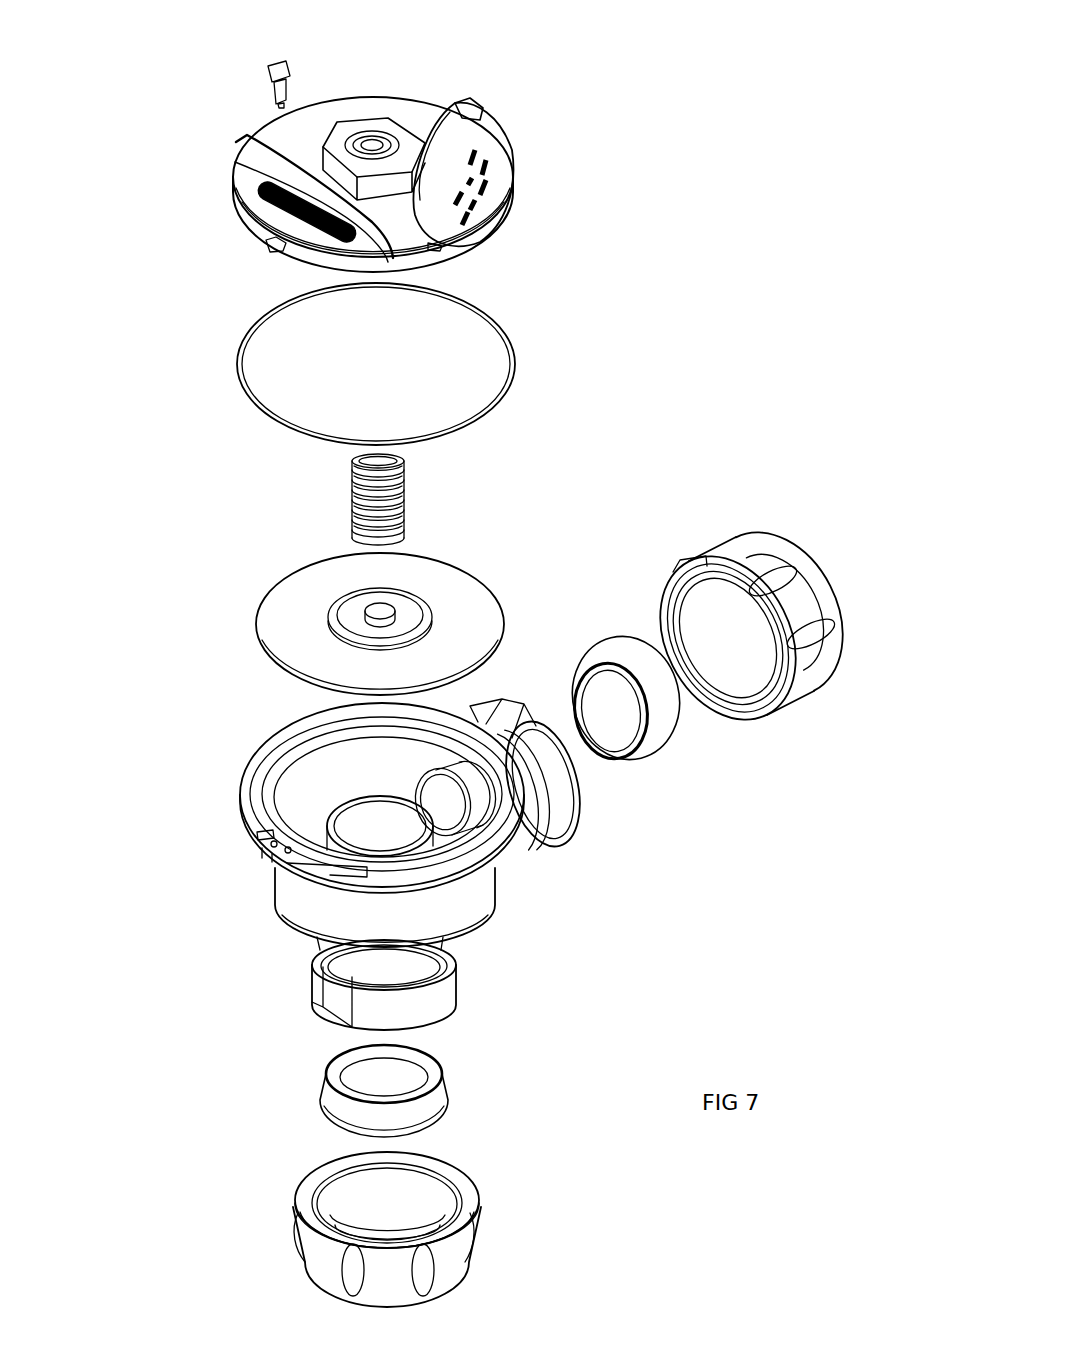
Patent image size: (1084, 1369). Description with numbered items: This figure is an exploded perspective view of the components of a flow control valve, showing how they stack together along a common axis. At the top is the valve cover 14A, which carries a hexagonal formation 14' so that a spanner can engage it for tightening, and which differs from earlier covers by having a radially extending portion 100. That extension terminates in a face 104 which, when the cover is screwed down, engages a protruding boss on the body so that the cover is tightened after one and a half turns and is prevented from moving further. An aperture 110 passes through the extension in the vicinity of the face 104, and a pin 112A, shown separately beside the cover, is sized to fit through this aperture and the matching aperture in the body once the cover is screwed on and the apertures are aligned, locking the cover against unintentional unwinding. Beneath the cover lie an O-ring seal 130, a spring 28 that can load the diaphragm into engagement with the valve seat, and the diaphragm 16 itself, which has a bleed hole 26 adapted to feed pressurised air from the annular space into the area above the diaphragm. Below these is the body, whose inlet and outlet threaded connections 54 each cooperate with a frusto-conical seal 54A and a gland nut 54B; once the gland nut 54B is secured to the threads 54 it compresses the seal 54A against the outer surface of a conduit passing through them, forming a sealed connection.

The hexagonal formation 14' is at (377, 121).
The valve cover 14A is at (517, 165).
The radially extending portion 100 is at (283, 253).
The face 104 is at (262, 245).
The aperture 110 is at (275, 247).
The pin 112A is at (268, 67).
The O-ring seal 130 is at (523, 353).
The spring 28 is at (408, 490).
The bleed hole 26 is at (322, 592).
The diaphragm 16 is at (510, 568).
The inlet and outlet threaded connections 54 is at (558, 813).
The frusto-conical seal 54A is at (437, 1098).
The gland nut 54B is at (483, 1225).